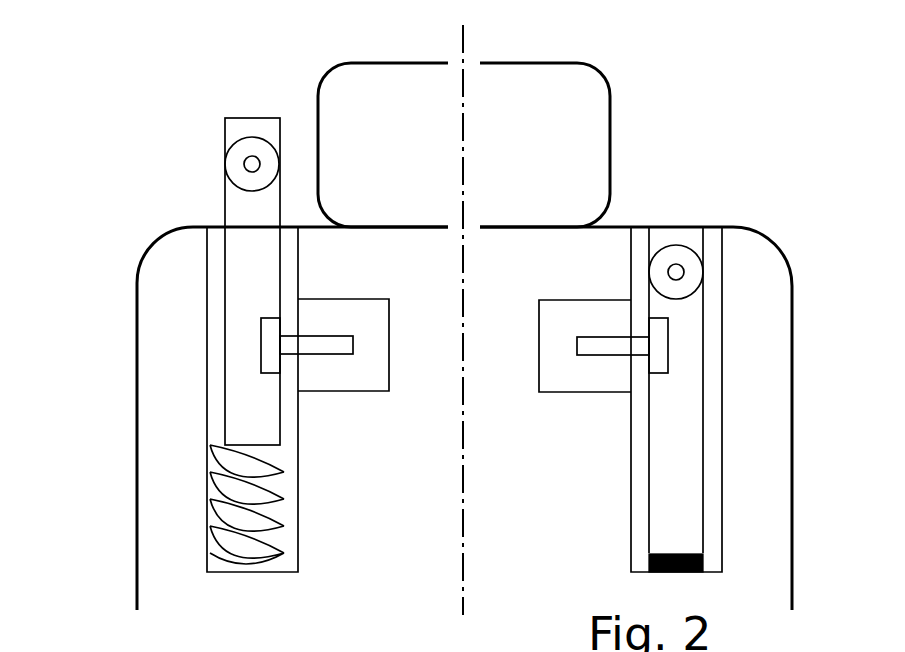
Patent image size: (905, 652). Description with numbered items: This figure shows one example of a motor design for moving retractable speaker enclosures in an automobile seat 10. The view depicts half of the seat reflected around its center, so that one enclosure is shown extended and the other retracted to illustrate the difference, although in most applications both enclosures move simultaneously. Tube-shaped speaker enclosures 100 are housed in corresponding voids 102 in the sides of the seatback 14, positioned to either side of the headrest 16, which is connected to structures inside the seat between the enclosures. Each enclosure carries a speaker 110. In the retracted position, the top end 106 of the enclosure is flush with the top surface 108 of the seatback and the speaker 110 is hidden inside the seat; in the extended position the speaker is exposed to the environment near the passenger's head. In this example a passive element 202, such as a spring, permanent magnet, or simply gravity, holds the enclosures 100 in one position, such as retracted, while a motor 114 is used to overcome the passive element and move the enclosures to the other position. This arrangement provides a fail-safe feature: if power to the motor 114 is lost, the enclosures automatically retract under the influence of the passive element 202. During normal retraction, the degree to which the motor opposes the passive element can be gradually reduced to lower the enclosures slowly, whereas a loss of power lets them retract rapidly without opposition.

The automobile seat 10 is at (83, 228).
The seatback 14 is at (367, 278).
The headrest 16 is at (392, 63).
The speaker enclosure 100 is at (226, 381).
The void 102 is at (207, 413).
The top end 106 is at (240, 118).
The top surface 108 is at (193, 227).
The speaker 110 is at (255, 137).
The motor 114 is at (381, 391).
The passive element 202 is at (263, 518).